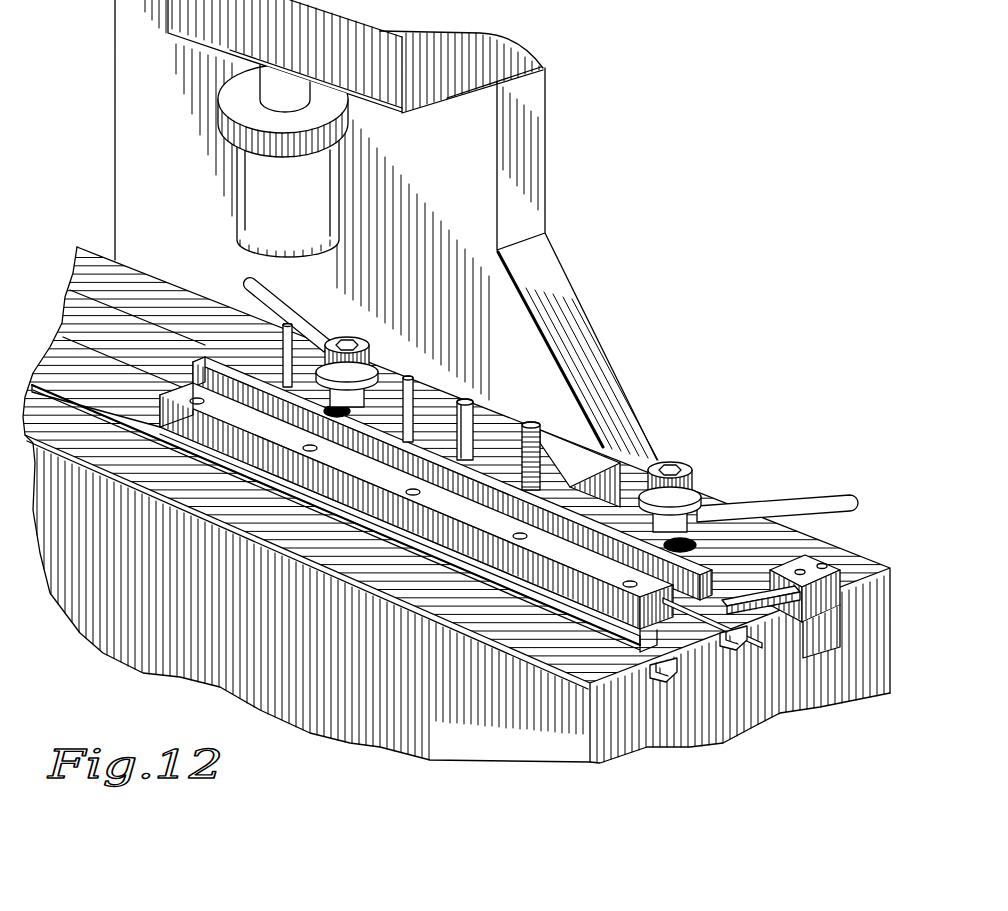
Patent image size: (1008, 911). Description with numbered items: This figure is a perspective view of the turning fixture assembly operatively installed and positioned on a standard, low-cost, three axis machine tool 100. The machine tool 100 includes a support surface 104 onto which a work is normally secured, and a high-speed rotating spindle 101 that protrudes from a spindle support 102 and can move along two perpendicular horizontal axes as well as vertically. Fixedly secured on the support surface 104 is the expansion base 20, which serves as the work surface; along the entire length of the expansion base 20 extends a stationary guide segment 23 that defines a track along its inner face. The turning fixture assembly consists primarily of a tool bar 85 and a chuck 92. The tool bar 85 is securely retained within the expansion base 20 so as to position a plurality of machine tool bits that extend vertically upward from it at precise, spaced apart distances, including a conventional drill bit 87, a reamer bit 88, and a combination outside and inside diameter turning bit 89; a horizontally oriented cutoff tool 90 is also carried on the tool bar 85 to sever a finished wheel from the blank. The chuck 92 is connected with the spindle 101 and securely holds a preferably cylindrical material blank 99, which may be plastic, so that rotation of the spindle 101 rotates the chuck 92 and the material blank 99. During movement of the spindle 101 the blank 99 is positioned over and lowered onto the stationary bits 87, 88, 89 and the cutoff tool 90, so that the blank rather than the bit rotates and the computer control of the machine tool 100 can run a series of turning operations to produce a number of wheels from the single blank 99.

The three axis machine tool 100 is at (556, 158).
The rotating spindle 101 is at (290, 97).
The spindle support 102 is at (212, 25).
The chuck 92 is at (348, 122).
The material blank 99 is at (338, 228).
The drill bit 87 is at (290, 343).
The reamer bit 88 is at (463, 402).
The turning bit 89 is at (533, 425).
The expansion base 20 is at (330, 473).
The tool bar 85 is at (470, 496).
The stationary guide segment 23 is at (573, 578).
The cutoff tool 90 is at (770, 606).
The support surface 104 is at (865, 597).